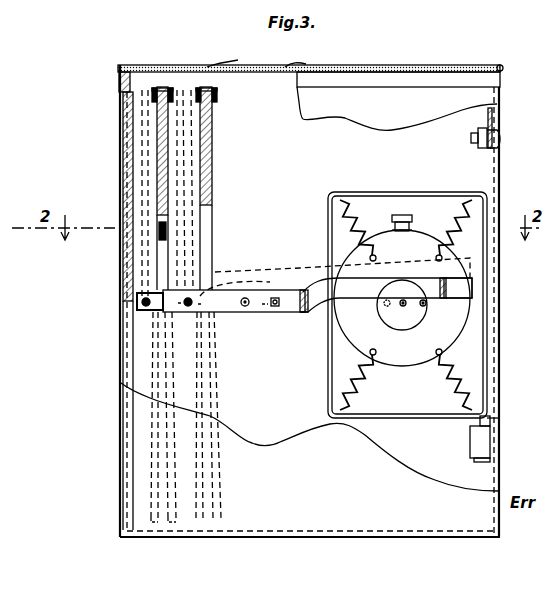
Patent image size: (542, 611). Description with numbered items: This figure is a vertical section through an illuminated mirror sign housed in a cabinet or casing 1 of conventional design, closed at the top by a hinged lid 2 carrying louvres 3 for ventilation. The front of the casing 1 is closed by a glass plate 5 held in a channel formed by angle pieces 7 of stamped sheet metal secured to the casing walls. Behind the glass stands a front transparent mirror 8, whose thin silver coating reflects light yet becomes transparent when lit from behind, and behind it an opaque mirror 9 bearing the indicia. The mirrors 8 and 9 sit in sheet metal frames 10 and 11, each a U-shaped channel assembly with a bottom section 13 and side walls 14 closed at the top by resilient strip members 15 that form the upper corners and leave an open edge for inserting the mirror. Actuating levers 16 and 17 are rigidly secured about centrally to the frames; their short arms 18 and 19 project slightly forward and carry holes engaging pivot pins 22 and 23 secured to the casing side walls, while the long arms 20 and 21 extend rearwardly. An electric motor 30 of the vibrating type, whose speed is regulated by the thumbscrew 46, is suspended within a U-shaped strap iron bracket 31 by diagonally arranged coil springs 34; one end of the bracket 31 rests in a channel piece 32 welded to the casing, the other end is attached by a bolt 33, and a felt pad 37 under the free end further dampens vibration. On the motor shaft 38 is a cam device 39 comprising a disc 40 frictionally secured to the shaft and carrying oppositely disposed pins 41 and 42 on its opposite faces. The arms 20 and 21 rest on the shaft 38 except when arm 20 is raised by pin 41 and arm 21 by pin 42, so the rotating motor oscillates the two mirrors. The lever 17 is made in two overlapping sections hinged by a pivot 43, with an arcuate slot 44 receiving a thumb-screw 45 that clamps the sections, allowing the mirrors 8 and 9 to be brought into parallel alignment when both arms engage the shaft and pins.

The cabinet or casing 1 is at (118, 464).
The hinged lid 2 is at (178, 65).
The louvres 3 is at (232, 61).
The glass plate 5 is at (127, 262).
The angle pieces 7 is at (140, 364).
The front transparent mirror 8 is at (155, 181).
The opaque mirror 9 is at (212, 163).
The sheet metal frame 10 is at (155, 136).
The sheet metal frame 11 is at (216, 135).
The bottom section 13 is at (200, 530).
The side walls 14 is at (150, 388).
The resilient strip members 15 is at (198, 90).
The actuating lever 16 is at (222, 272).
The actuating lever 17 is at (232, 312).
The short arm 18 is at (139, 308).
The short arm 19 is at (178, 312).
The long arm 20 is at (262, 278).
The long arm 21 is at (483, 294).
The pin 22 is at (138, 300).
The pin 23 is at (188, 298).
The electric motor 30 is at (404, 368).
The bracket 31 is at (410, 193).
The channel piece 32 is at (470, 452).
The bolt 33 is at (496, 133).
The coil springs 34 is at (356, 212).
The felt pad 37 is at (490, 421).
The shaft 38 is at (405, 307).
The cam device 39 is at (401, 330).
The disc 40 is at (346, 363).
The pin 41 is at (425, 305).
The pin 42 is at (375, 318).
The pivot 43 is at (244, 312).
The arcuate slot 44 is at (275, 306).
The thumb-screw 45 is at (292, 290).
The thumbscrew 46 is at (410, 226).